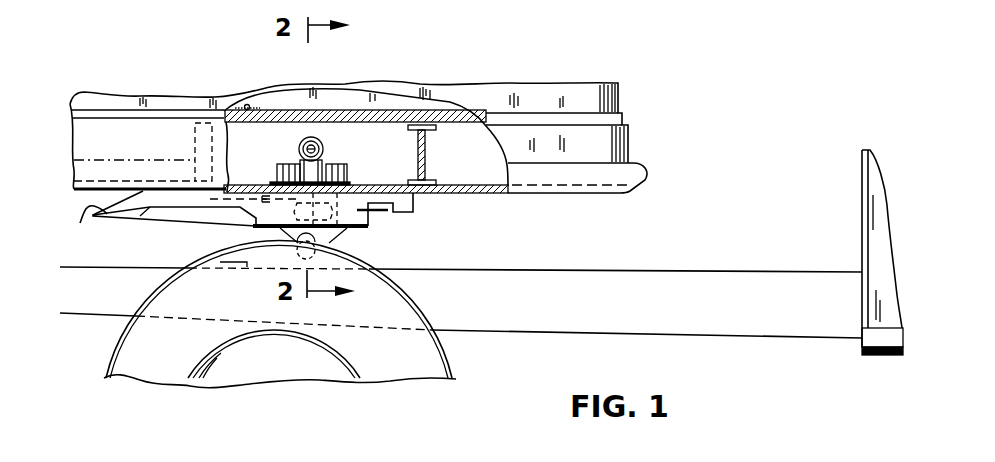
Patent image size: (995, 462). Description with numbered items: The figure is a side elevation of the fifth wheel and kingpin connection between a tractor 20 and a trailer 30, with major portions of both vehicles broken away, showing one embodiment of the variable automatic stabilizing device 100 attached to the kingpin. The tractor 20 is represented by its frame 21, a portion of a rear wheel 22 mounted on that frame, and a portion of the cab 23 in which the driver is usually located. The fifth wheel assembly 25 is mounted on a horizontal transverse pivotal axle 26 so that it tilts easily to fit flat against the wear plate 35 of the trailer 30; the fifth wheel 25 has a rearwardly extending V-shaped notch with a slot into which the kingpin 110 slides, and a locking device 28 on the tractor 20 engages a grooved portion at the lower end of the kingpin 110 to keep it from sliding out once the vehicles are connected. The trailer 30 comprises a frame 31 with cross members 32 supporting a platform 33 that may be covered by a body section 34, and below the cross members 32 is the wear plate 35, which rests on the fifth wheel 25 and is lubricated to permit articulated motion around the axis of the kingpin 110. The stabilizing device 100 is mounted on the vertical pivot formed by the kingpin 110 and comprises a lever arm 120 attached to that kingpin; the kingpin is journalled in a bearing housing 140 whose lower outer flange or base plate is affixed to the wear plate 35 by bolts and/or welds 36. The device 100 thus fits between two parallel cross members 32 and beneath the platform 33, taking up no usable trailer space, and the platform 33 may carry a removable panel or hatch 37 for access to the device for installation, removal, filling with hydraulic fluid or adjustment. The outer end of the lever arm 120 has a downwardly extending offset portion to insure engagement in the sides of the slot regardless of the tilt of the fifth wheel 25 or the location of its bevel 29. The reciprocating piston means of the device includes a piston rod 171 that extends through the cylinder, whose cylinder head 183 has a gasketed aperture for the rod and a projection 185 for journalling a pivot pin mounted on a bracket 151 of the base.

The tractor 20 is at (790, 358).
The frame 21 is at (740, 272).
The rear wheel 22 is at (152, 372).
The cab 23 is at (870, 234).
The fifth wheel assembly 25 is at (140, 239).
The horizontal transverse pivotal axle 26 is at (340, 236).
The locking device 28 is at (416, 223).
The bevel 29 is at (82, 219).
The trailer 30 is at (645, 78).
The frame 31 is at (597, 213).
The cross members 32 is at (196, 142).
The platform 33 is at (400, 118).
The body section 34 is at (505, 100).
The wear plate 35 is at (485, 194).
The bolts and/or welds 36 is at (352, 184).
The removable panel or hatch 37 is at (290, 112).
The stabilizing device 100 is at (328, 128).
The kingpin 110 is at (225, 231).
The lever arm 120 is at (196, 201).
The bearing housing 140 is at (356, 163).
The bracket 151 is at (302, 178).
The piston rod 171 is at (302, 153).
The cylinder head 183 is at (300, 145).
The projection 185 is at (331, 165).